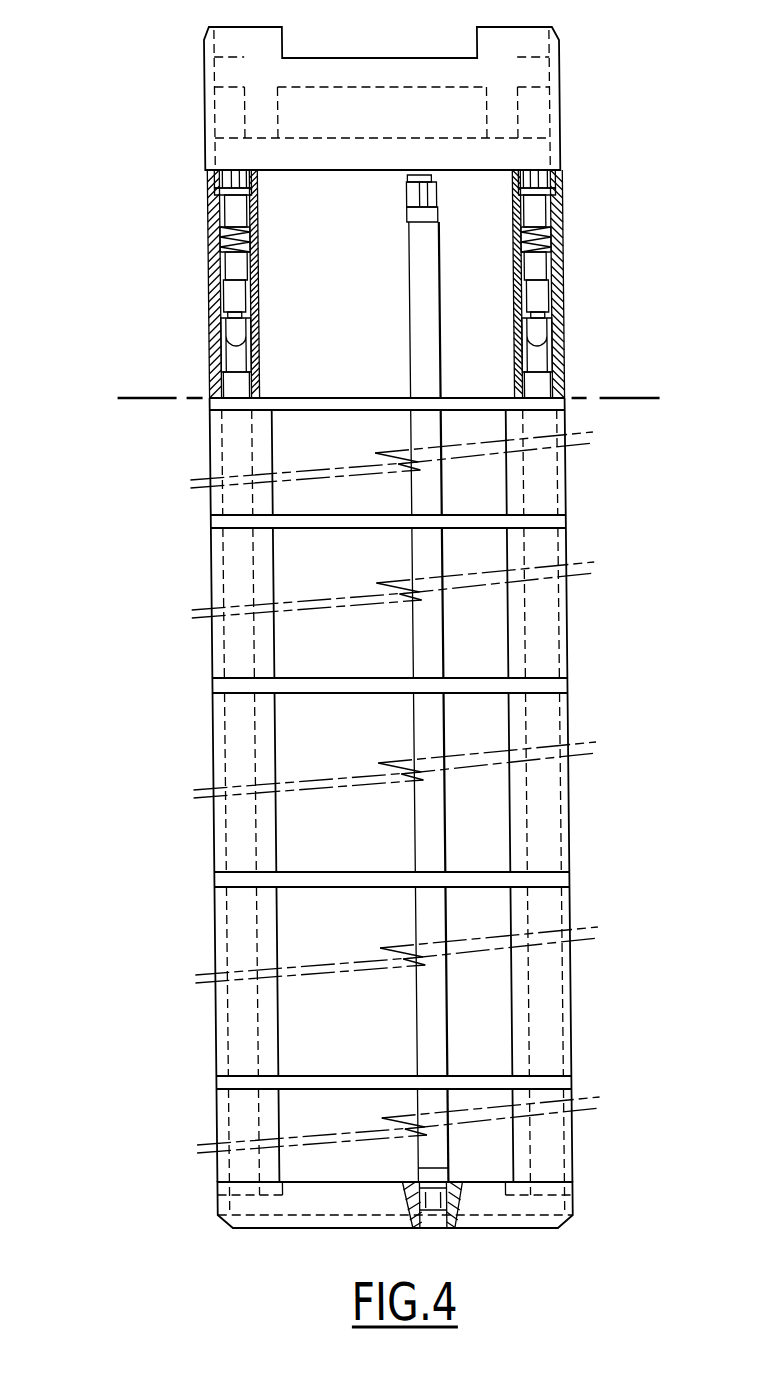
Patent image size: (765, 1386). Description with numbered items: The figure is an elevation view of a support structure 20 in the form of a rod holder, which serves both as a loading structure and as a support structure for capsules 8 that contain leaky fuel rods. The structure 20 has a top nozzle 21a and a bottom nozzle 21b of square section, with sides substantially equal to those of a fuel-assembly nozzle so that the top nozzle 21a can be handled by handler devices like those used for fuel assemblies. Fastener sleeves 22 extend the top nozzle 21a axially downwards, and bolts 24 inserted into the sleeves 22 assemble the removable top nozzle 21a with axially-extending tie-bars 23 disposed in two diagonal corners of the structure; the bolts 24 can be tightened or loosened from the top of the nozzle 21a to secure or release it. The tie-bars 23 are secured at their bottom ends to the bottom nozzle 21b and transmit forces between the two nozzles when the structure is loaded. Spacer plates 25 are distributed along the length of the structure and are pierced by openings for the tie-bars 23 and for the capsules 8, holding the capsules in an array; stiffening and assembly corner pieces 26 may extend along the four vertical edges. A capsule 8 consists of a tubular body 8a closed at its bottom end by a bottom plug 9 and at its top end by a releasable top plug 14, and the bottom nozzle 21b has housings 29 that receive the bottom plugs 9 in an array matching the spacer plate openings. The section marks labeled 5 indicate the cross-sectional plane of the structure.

The support structure 20 is at (146, 628).
The top nozzle 21a is at (234, 117).
The bottom nozzle 21b is at (295, 1200).
The fastener sleeves 22 is at (563, 210).
The tie-bars 23 is at (211, 572).
The bolts 24 is at (227, 207).
The spacer plates 25 is at (242, 518).
The stiffening and assembly corner pieces 26 is at (257, 928).
The capsule 8 is at (416, 333).
The tubular body 8a is at (431, 1040).
The bottom plug 9 is at (423, 1228).
The top plug 14 is at (426, 197).
The housings 29 is at (445, 1228).
The section line V-V 5 is at (619, 384).